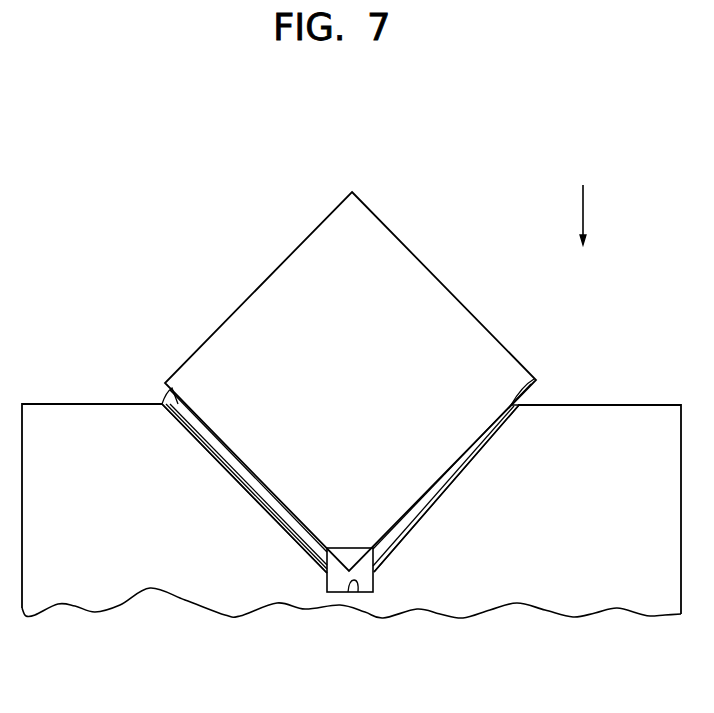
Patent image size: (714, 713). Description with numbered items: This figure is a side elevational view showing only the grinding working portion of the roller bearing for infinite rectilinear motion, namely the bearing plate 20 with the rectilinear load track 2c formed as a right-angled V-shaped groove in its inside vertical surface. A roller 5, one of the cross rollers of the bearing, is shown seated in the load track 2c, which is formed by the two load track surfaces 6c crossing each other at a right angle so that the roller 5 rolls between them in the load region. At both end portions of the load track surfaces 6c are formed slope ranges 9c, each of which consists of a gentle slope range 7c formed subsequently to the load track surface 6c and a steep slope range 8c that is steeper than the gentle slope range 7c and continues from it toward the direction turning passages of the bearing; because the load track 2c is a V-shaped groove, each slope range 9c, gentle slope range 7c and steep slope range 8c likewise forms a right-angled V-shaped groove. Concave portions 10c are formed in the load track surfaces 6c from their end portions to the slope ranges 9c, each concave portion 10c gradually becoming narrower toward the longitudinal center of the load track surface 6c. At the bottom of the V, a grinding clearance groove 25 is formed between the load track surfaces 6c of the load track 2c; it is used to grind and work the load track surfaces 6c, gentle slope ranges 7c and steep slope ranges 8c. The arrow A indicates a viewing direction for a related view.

The roller 5 is at (378, 248).
The bearing plate 20 is at (612, 405).
The grinding clearance groove 25 is at (357, 592).
The rectilinear load track 2c is at (450, 458).
The load track surface 6c is at (198, 414).
The gentle slope range 7c is at (280, 508).
The steep slope range 8c is at (297, 525).
The slope range 9c is at (233, 573).
The concave portion 10c is at (176, 404).
The direction arrow A is at (586, 212).